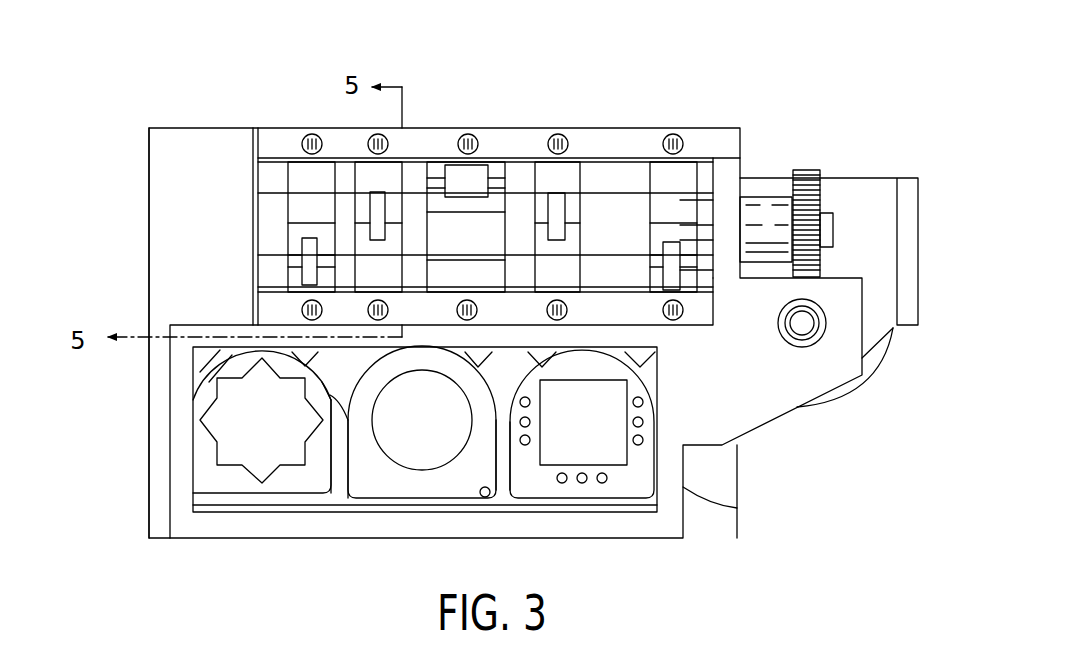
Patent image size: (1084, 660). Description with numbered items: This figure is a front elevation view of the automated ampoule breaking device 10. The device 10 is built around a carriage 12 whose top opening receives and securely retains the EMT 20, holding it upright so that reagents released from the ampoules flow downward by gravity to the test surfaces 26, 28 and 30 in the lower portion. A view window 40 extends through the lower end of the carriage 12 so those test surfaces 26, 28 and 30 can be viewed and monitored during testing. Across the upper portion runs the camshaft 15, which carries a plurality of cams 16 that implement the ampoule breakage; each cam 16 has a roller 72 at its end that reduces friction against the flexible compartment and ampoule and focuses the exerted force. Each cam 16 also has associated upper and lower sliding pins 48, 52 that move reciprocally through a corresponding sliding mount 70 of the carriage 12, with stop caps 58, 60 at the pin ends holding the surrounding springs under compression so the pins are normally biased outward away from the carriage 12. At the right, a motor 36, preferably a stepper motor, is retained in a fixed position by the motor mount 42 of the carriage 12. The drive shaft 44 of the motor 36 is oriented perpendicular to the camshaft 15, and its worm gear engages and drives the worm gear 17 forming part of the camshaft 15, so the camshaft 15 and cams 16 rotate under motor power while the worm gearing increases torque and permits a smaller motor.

The device 10 is at (882, 112).
The carriage 12 is at (146, 165).
The camshaft 15 is at (834, 230).
The cam 16 is at (363, 170).
The worm gear 17 is at (808, 170).
The EMT 20 is at (337, 498).
The test surface 26 is at (205, 420).
The test surface 28 is at (417, 452).
The test surface 30 is at (607, 452).
The motor 36 is at (851, 397).
The view window 40 is at (240, 505).
The motor mount 42 is at (918, 250).
The drive shaft 44 is at (802, 333).
The upper sliding pin 48 is at (369, 137).
The lower sliding pin 52 is at (364, 312).
The stop cap 58 is at (459, 140).
The stop cap 60 is at (456, 309).
The sliding mount 70 is at (727, 143).
The roller 72 is at (310, 265).